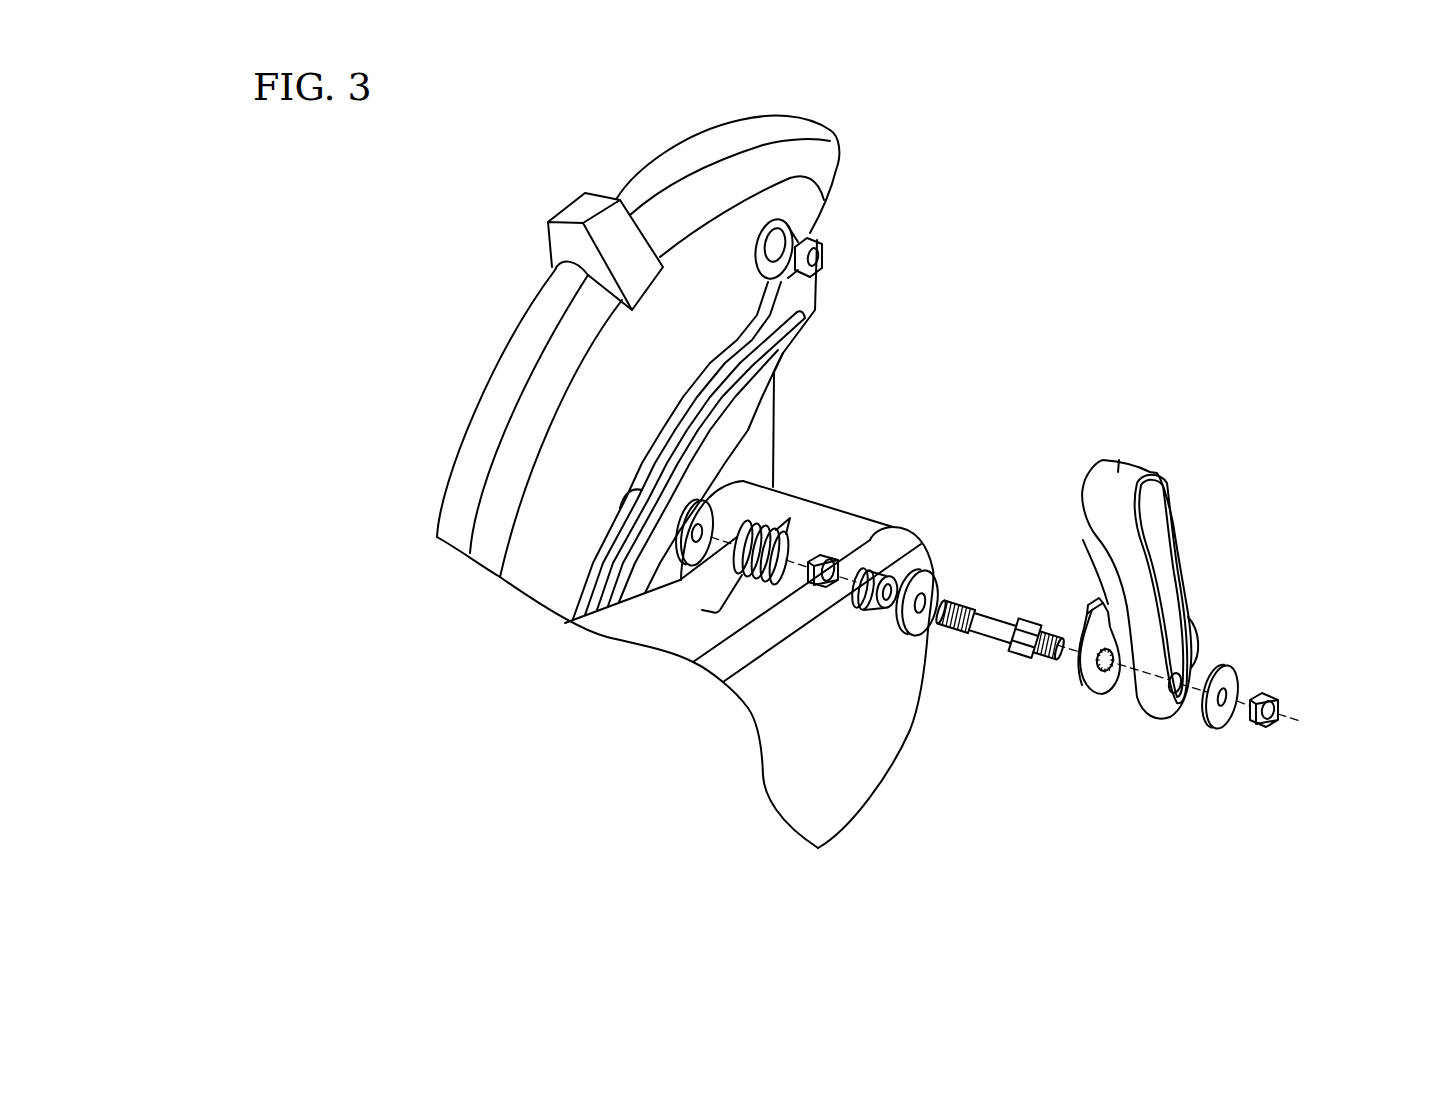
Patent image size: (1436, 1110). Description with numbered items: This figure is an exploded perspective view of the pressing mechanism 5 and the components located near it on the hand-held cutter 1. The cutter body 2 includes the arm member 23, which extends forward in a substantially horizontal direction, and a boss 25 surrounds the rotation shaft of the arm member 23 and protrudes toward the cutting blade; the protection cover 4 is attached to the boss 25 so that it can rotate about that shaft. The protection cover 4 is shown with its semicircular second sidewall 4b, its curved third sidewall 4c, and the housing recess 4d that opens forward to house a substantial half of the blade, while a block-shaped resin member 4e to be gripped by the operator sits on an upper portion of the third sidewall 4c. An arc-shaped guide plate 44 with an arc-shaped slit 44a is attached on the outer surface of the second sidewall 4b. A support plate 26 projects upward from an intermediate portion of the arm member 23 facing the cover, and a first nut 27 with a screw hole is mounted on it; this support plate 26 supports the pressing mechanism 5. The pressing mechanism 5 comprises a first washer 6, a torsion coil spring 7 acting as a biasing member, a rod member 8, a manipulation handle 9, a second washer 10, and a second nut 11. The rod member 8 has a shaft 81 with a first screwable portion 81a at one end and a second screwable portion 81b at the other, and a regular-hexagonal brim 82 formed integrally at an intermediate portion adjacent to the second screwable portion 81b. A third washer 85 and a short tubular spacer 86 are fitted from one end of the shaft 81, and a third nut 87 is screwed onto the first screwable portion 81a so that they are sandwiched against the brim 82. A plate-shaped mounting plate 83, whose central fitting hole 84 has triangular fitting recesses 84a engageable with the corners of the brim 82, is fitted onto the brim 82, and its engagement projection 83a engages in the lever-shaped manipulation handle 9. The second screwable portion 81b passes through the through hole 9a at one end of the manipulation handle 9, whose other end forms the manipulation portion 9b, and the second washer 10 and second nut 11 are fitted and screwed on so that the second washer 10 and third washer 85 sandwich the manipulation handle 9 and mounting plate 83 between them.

The hand-held cutter 1 is at (1117, 268).
The cutter body 2 is at (871, 814).
The protection cover 4 is at (854, 148).
The second sidewall 4b is at (792, 168).
The third sidewall 4c is at (710, 128).
The housing recess 4d is at (841, 176).
The resin member 4e is at (594, 195).
The pressing mechanism 5 is at (1078, 428).
The first washer 6 is at (718, 508).
The torsion coil spring 7 is at (801, 512).
The rod member 8 is at (978, 661).
The manipulation handle 9 is at (1160, 470).
The through hole 9a is at (1177, 690).
The manipulation portion 9b is at (1119, 462).
The second washer 10 is at (1237, 665).
The second nut 11 is at (1278, 698).
The arm member 23 is at (889, 733).
The boss 25 is at (750, 493).
The support plate 26 is at (592, 560).
The first nut 27 is at (620, 492).
The guide plate 44 is at (829, 299).
The arc-shaped slit 44a is at (752, 355).
The shaft 81 is at (1001, 603).
The first screwable portion 81a is at (950, 603).
The second screwable portion 81b is at (1047, 630).
The brim 82 is at (1021, 618).
The mounting plate 83 is at (1078, 686).
The engagement projection 83a is at (1108, 604).
The fitting hole 84 is at (1117, 688).
The fitting recesses 84a is at (1105, 712).
The third washer 85 is at (937, 578).
The spacer 86 is at (868, 568).
The third nut 87 is at (826, 556).